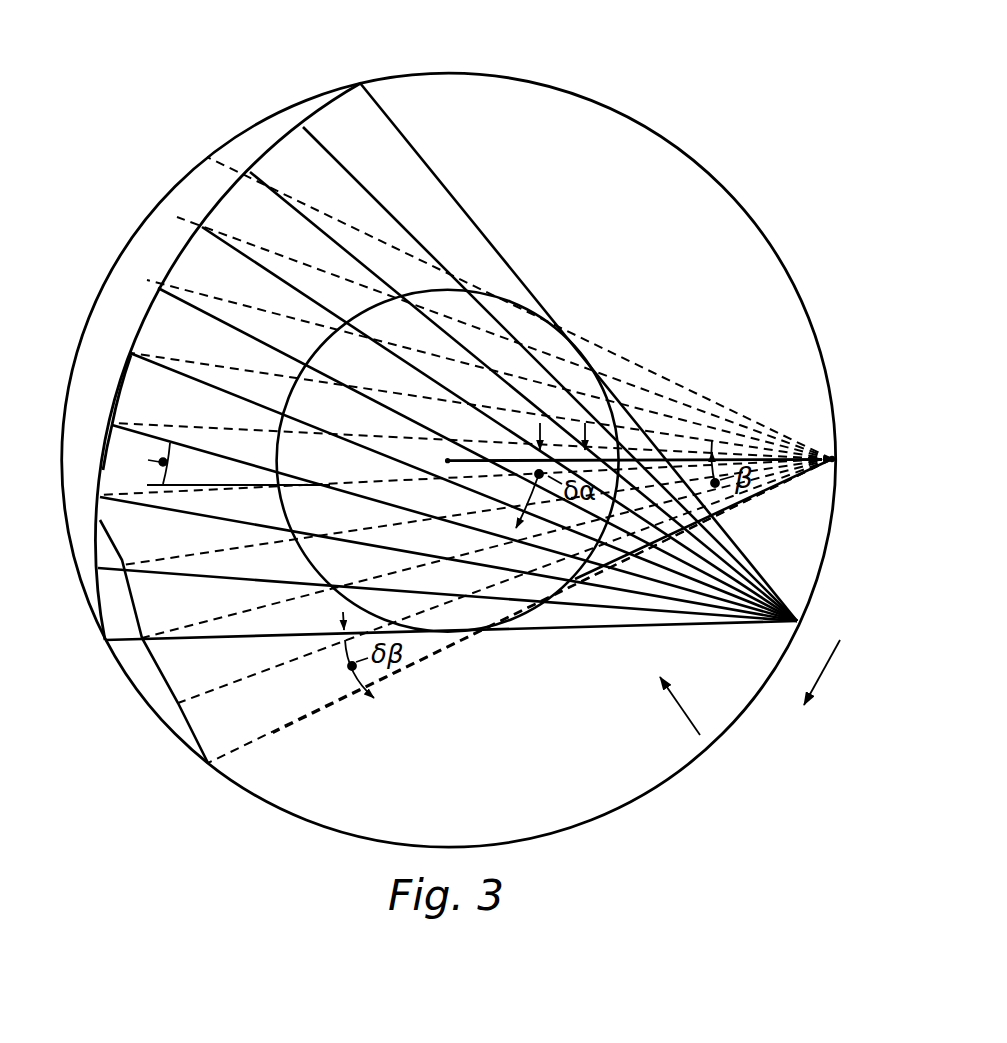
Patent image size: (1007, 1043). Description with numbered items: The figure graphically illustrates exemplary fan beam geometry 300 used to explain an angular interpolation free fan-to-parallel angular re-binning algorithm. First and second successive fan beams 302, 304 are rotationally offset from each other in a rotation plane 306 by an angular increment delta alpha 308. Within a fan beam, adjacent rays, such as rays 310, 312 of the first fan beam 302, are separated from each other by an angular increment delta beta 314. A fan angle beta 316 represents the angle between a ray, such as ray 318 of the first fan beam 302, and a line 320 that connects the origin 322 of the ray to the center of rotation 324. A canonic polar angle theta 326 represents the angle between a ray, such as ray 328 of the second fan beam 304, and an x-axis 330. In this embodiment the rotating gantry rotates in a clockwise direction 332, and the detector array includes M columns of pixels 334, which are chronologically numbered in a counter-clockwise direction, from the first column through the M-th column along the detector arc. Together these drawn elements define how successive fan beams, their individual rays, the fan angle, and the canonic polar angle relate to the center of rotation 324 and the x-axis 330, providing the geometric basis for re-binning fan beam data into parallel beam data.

The fan beam geometry 300 is at (724, 146).
The first fan beam 302 is at (791, 427).
The second fan beam 304 is at (700, 735).
The rotation plane 306 is at (541, 83).
The angular increment (delta alpha) 308 is at (596, 367).
The ray 310 is at (273, 733).
The ray 312 is at (295, 658).
The angular increment (delta beta) 314 is at (399, 675).
The fan angle (beta) 316 is at (693, 446).
The ray 318 is at (753, 497).
The line 320 is at (787, 483).
The origin 322 is at (833, 458).
The center of rotation 324 is at (448, 459).
The canonic polar angle (theta) 326 is at (110, 452).
The ray 328 is at (150, 428).
The x-axis 330 is at (193, 487).
The clockwise direction 332 is at (823, 670).
The columns of pixels 334 is at (162, 170).